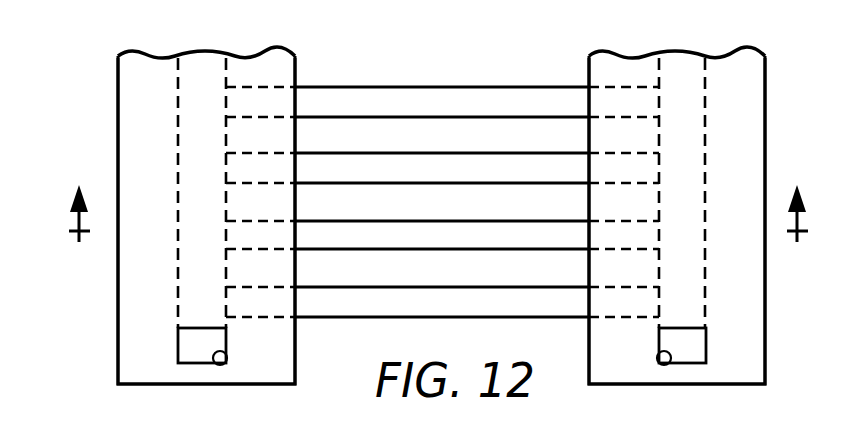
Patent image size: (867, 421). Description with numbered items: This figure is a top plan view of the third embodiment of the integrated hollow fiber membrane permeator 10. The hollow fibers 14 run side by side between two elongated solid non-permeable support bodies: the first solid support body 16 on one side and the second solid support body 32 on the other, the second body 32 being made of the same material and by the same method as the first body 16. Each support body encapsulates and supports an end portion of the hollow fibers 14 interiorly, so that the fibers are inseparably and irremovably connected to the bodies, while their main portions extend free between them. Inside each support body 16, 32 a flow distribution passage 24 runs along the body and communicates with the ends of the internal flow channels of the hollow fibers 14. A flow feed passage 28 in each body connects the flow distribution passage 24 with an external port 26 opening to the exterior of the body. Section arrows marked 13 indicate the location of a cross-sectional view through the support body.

The integrated hollow fiber membrane permeator 10 is at (67, 150).
The section line 13- 13 is at (441, 226).
The hollow fibers 14 is at (466, 84).
The elongated solid non-permeable support body 16 is at (127, 103).
The second flow distribution passage 24 is at (177, 152).
The external port 26 is at (178, 342).
The flow feed passage 28 is at (230, 358).
The second elongated solid non-permeable support body 32 is at (720, 60).